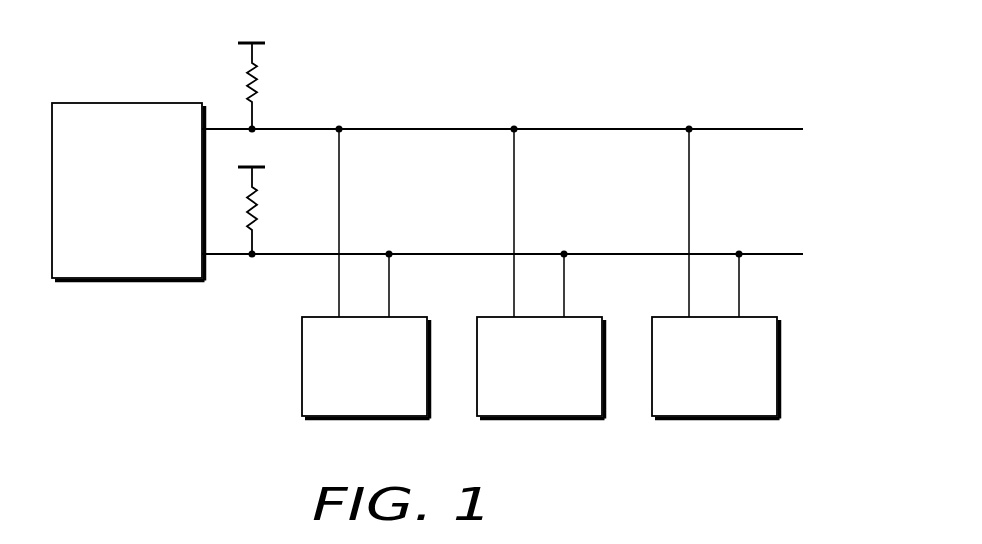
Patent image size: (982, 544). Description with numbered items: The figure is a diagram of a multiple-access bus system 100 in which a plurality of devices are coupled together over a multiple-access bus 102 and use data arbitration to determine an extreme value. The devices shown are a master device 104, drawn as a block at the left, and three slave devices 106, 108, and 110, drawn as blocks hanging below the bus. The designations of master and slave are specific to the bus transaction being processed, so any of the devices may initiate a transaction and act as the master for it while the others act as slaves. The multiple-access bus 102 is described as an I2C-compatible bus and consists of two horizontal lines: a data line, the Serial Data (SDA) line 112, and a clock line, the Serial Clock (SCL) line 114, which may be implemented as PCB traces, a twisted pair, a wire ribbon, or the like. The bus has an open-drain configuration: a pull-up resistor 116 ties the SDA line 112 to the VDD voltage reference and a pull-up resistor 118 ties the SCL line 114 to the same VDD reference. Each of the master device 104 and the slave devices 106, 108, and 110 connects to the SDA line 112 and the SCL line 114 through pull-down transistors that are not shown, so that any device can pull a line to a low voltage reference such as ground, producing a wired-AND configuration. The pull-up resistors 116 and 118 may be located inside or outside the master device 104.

The multiple-access bus system 100 is at (190, 409).
The multiple-access bus 102 is at (483, 116).
The master device 104 is at (179, 255).
The slave device 106 is at (418, 404).
The slave device 108 is at (593, 404).
The slave device 110 is at (768, 404).
The Serial Data (SDA) line 112 is at (433, 125).
The Serial Clock (SCL) line 114 is at (433, 250).
The pull-up resistor 116 is at (263, 74).
The pull-up resistor 118 is at (263, 200).